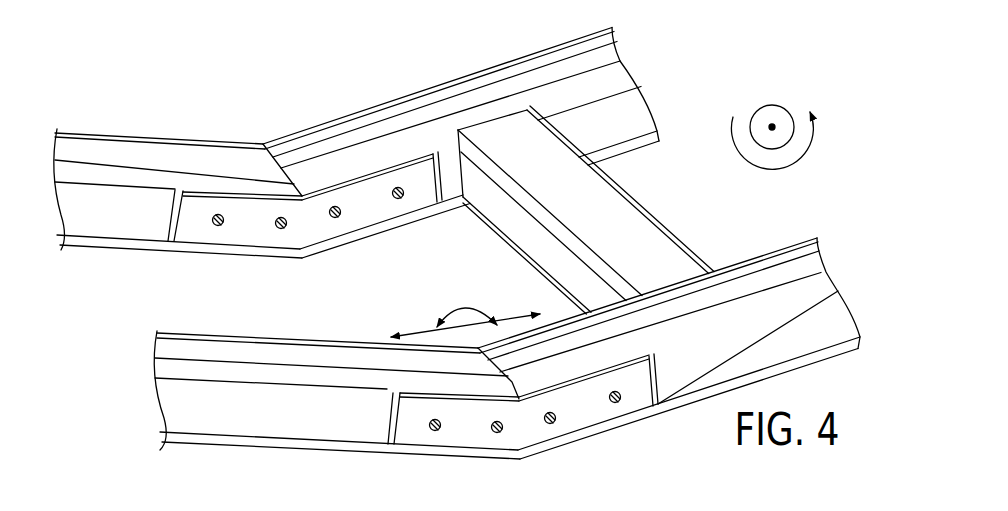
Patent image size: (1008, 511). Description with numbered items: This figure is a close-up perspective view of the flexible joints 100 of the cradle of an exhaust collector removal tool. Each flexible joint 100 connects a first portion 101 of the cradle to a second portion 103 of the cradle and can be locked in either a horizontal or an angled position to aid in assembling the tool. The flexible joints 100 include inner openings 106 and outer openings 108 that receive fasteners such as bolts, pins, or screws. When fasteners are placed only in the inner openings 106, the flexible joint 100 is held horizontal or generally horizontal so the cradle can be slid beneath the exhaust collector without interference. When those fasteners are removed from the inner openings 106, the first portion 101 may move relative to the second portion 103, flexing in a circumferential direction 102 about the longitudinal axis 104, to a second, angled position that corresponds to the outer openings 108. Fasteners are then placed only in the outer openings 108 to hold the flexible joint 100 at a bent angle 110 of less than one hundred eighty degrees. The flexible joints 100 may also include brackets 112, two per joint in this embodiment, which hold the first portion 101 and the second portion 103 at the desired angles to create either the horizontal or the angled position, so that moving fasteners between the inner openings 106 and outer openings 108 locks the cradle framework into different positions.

The flexible joint 100 is at (457, 241).
The first portion of the cradle 101 is at (129, 129).
The circumferential direction 102 is at (777, 168).
The second portion of the cradle 103 is at (362, 101).
The longitudinal axis 104 is at (770, 125).
The inner openings 106 is at (336, 219).
The outer openings 108 is at (221, 226).
The bent angle 110 is at (463, 303).
The brackets 112 is at (193, 223).